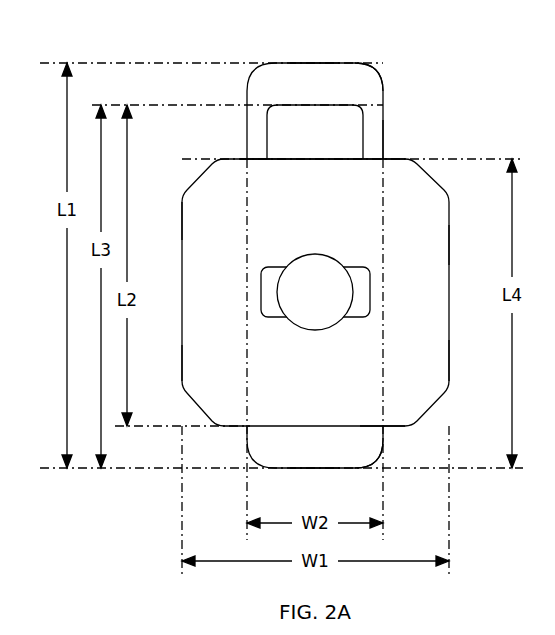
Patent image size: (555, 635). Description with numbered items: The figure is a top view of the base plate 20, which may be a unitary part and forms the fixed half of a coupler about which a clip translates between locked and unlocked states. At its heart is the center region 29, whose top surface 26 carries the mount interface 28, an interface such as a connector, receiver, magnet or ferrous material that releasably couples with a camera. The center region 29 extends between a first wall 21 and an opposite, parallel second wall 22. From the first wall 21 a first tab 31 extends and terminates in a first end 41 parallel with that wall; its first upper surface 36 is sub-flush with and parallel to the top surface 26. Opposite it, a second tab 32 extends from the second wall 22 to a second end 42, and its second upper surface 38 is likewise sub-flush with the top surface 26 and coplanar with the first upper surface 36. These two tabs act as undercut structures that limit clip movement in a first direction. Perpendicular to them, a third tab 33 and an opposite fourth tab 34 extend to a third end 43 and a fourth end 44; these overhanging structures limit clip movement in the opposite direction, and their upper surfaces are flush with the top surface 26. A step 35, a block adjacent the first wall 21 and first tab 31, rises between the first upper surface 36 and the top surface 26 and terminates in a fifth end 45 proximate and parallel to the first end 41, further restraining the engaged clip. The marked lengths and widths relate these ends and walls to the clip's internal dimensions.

The base plate 20 is at (326, 261).
The first wall 21 is at (257, 156).
The second wall 22 is at (378, 428).
The top surface 26 is at (315, 292).
The mount interface 28 is at (337, 302).
The center region 29 is at (337, 205).
The first tab 31 is at (383, 70).
The second tab 32 is at (373, 466).
The third tab 33 is at (182, 366).
The fourth tab 34 is at (449, 245).
The step 35 is at (383, 135).
The first upper surface 36 is at (315, 111).
The second upper surface 38 is at (315, 447).
The first end 41 is at (313, 63).
The second end 42 is at (318, 470).
The third end 43 is at (182, 218).
The fourth end 44 is at (450, 357).
The fifth end 45 is at (345, 103).